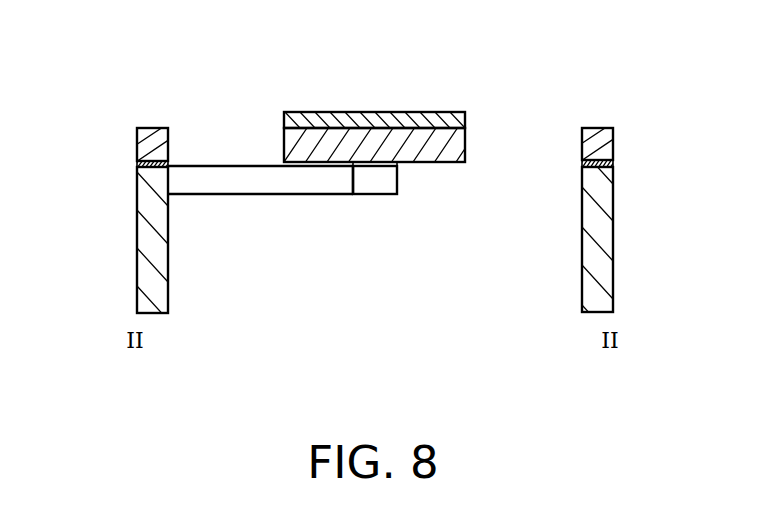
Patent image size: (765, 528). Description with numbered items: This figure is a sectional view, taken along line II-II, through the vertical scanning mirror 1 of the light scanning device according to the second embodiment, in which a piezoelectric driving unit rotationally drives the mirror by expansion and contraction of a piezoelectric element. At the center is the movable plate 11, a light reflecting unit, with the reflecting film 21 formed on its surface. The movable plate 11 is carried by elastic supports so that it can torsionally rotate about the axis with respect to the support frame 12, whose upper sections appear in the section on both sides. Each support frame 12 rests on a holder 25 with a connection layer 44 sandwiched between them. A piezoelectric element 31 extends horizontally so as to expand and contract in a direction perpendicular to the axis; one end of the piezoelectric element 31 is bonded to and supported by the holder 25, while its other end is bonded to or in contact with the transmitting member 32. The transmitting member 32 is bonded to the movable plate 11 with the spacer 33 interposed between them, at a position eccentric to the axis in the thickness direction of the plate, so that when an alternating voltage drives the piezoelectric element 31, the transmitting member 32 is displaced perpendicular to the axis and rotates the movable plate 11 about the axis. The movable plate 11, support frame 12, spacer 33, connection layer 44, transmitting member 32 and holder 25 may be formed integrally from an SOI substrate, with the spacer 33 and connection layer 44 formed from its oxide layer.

The vertical scanning mirror 1 is at (600, 74).
The movable plate 11 is at (467, 138).
The support frame 12 is at (143, 152).
The reflecting film 21 is at (422, 119).
The holder 25 is at (604, 302).
The piezoelectric element 31 is at (205, 177).
The transmitting member 32 is at (370, 183).
The spacer 33 is at (398, 163).
The connection layer 44 is at (140, 166).